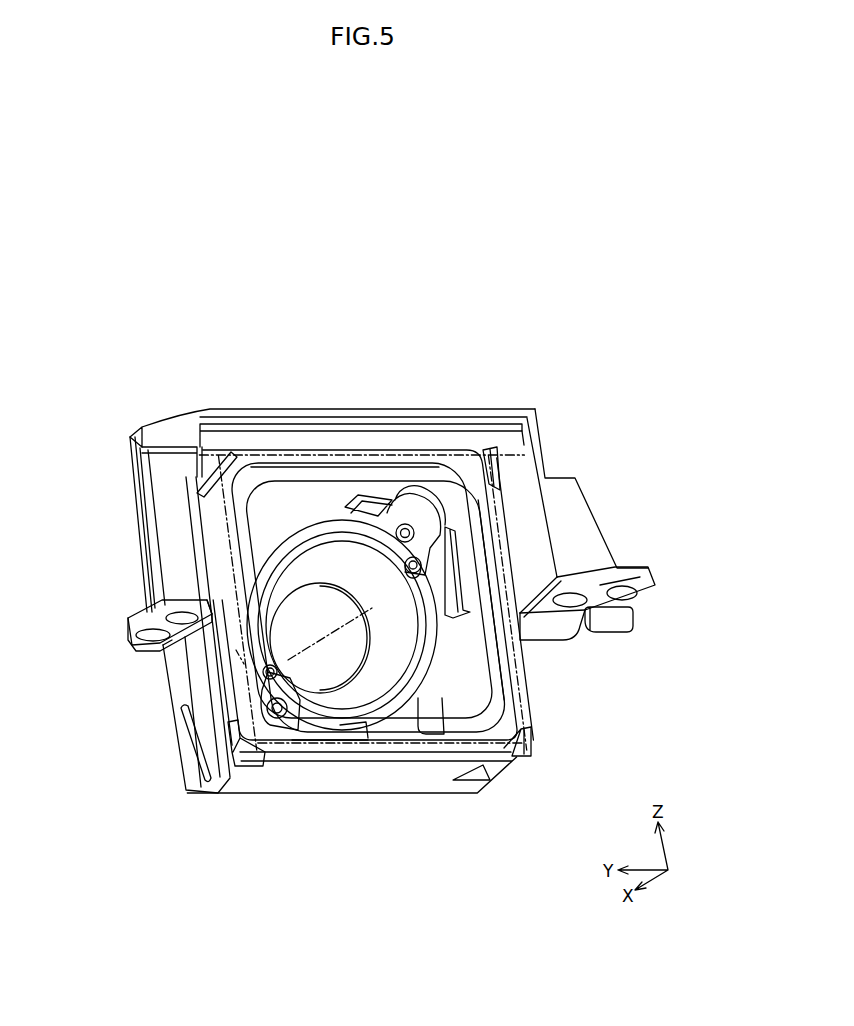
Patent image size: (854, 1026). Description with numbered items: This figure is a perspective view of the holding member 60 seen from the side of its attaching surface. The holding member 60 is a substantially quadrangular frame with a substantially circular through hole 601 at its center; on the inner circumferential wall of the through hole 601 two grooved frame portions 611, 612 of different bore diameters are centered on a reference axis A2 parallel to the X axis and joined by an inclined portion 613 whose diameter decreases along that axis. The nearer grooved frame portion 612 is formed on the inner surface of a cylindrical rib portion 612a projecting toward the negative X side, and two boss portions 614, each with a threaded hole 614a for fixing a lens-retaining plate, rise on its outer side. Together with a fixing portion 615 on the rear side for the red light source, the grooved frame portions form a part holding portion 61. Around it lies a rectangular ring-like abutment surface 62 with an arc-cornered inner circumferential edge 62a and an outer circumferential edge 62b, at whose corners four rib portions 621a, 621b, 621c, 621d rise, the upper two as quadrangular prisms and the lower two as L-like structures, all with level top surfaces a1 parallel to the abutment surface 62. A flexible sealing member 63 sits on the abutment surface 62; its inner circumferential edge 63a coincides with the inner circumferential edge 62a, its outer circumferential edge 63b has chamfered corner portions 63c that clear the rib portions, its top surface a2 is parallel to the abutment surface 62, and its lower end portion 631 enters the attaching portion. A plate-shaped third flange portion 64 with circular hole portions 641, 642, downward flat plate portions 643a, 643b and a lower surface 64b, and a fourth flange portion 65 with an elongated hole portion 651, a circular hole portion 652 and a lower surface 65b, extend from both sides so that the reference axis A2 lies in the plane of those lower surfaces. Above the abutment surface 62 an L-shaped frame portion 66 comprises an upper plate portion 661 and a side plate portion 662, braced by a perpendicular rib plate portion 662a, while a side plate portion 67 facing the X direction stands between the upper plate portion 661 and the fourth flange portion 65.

The holding member 60 is at (668, 391).
The through hole 601 is at (313, 604).
The part holding portion 61 is at (326, 493).
The grooved frame portion 611 is at (350, 522).
The grooved frame portion 612 is at (360, 563).
The rib portion 612a is at (333, 583).
The inclined portion 613 is at (376, 505).
The boss portion 614 is at (412, 523).
The threaded hole 614a is at (417, 560).
The fixing portion 615 is at (351, 639).
The abutment surface 62 is at (508, 667).
The inner circumferential edge 62a is at (487, 650).
The outer circumferential edge 62b is at (527, 690).
The rib portion 621a is at (205, 470).
The rib portion 621b is at (500, 465).
The rib portion 621c is at (252, 760).
The rib portion 621d is at (520, 760).
The lower end portion 631 is at (407, 757).
The sealing member 63 is at (233, 700).
The inner circumferential edge 63a is at (257, 663).
The outer circumferential edge 63b is at (243, 693).
The corner portion 63c is at (237, 723).
The third flange portion 64 is at (648, 578).
The hole portion 641 is at (640, 594).
The hole portion 642 is at (600, 591).
The flat plate portion 643a is at (620, 618).
The flat plate portion 643b is at (573, 632).
The lower surface 64b is at (573, 592).
The fourth flange portion 65 is at (137, 617).
The elongated hole portion 651 is at (153, 613).
The hole portion 652 is at (125, 643).
The lower surface 65b is at (152, 627).
The frame portion 66 is at (547, 414).
The upper plate portion 661 is at (287, 412).
The side plate portion 662 is at (538, 455).
The rib plate portion 662a is at (567, 495).
The side plate portion 67 is at (170, 530).
The top surface a1 is at (197, 465).
The top surface a2 is at (240, 657).
The reference axis A2 is at (338, 620).